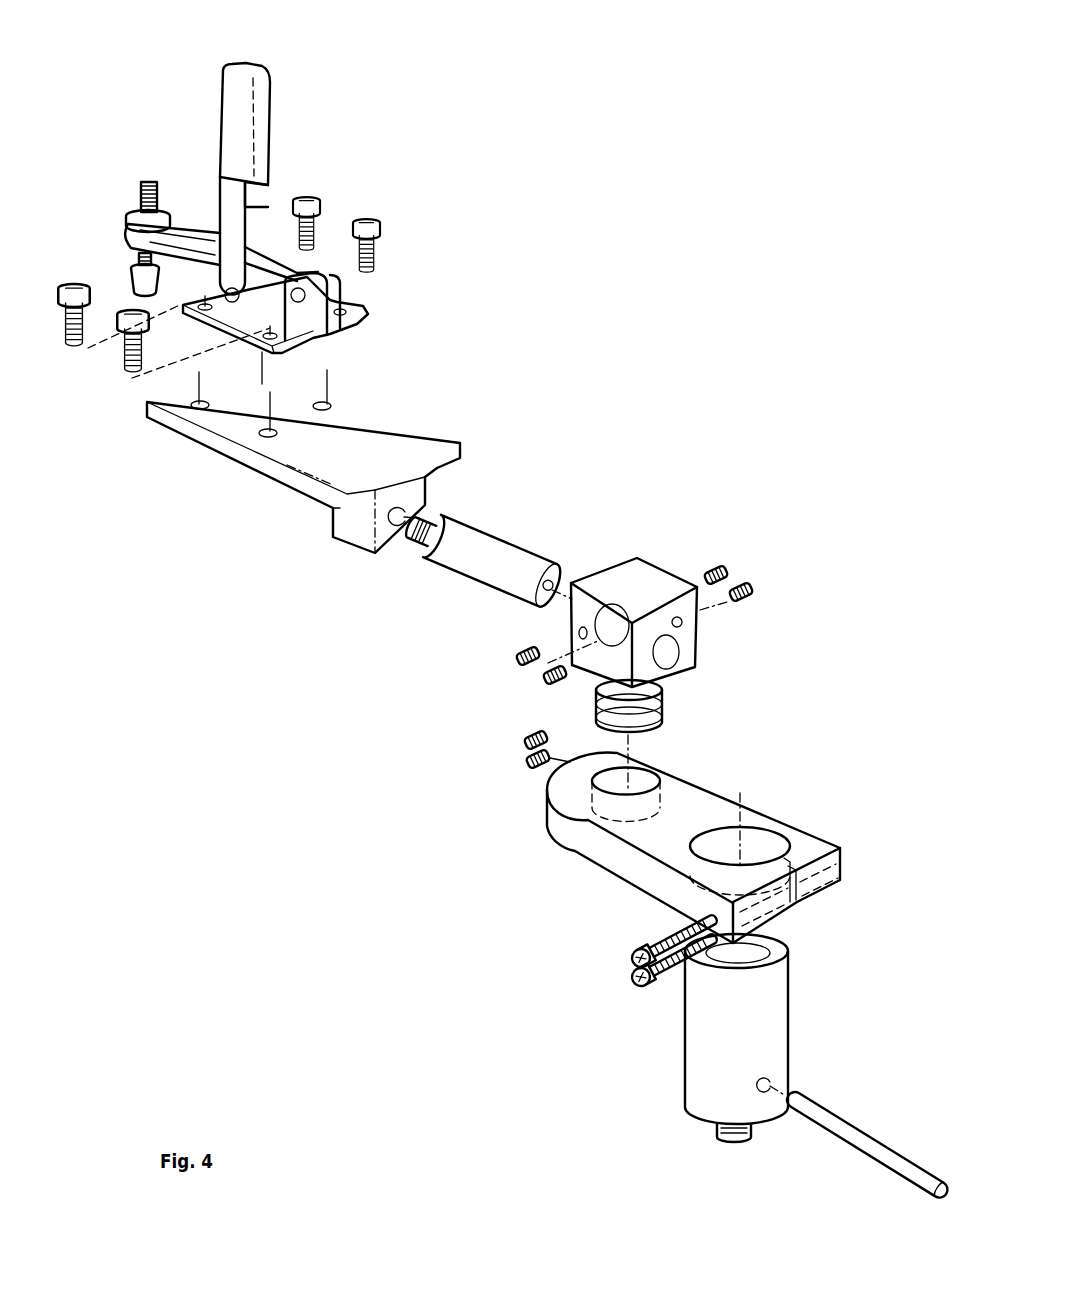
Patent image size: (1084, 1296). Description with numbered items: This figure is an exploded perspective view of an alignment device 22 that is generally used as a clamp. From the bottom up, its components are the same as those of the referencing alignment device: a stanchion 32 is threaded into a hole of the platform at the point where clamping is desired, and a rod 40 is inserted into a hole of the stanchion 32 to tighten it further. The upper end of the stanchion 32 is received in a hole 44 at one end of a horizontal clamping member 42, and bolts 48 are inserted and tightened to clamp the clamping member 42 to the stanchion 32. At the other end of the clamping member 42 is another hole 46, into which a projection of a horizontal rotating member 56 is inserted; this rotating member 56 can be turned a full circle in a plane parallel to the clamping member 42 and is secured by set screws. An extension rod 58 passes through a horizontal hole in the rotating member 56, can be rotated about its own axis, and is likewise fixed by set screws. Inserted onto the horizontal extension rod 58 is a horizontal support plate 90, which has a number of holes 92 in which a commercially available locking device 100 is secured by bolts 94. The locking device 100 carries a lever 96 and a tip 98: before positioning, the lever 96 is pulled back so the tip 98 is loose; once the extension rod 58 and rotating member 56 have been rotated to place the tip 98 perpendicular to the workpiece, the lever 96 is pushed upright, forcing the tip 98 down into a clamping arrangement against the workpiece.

The alignment device 22 is at (605, 355).
The stanchion 32 is at (788, 1013).
The rod 40 is at (850, 1128).
The horizontal clamping member 42 is at (578, 862).
The hole 44 is at (747, 830).
The hole 46 is at (637, 780).
The bolts 48 is at (632, 974).
The horizontal rotating member 56 is at (640, 558).
The extension rod 58 is at (487, 525).
The horizontal support plate 90 is at (373, 418).
The holes 92 is at (326, 405).
The bolts 94 is at (366, 221).
The lever 96 is at (267, 70).
The tip 98 is at (132, 267).
The locking device 100 is at (304, 120).